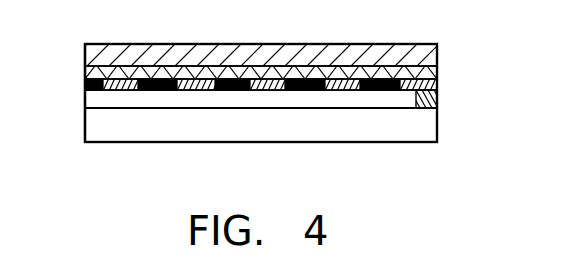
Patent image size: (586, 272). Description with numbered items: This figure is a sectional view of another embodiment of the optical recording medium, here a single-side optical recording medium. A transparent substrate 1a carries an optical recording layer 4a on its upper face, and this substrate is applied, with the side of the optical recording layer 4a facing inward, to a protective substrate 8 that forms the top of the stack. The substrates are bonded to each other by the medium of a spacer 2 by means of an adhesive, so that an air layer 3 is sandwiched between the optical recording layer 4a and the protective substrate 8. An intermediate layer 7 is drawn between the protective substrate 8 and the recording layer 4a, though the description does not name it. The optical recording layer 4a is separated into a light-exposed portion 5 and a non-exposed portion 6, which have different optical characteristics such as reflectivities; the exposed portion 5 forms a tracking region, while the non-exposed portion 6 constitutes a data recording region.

The protective substrate 8 is at (432, 62).
The adhesive layer 7 is at (437, 73).
The optical recording layer 4a is at (437, 87).
The spacer 2 is at (437, 104).
The transparent substrate 1a is at (430, 128).
The air layer 3 is at (92, 98).
The light-exposed portion 5 is at (160, 91).
The non-exposed portion 6 is at (263, 91).